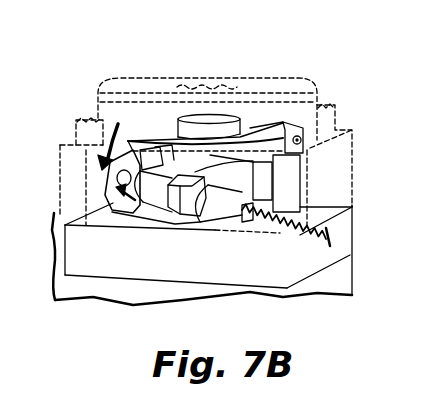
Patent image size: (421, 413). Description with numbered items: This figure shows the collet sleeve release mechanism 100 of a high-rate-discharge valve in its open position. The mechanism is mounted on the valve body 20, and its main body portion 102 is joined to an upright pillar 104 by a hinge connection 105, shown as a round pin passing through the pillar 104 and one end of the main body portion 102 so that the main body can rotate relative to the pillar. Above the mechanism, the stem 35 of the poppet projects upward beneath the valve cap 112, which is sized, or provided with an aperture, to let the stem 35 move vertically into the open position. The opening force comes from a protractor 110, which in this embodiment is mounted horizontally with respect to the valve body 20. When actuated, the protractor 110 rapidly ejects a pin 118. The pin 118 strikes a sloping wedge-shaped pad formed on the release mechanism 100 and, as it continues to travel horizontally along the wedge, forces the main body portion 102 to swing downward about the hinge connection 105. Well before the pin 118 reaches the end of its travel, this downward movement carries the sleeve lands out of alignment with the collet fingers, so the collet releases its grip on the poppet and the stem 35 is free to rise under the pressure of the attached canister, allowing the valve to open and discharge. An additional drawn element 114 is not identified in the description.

The collet sleeve release mechanism 100 is at (76, 100).
The main body portion 102 is at (162, 128).
The stem 35 is at (222, 118).
The valve cap 112 is at (278, 77).
The hinge connection 105 is at (302, 141).
The pillar 104 is at (283, 172).
The toothed rack 114 is at (322, 224).
The pin 118 is at (110, 178).
The valve body 20 is at (73, 252).
The protractor 110 is at (173, 206).